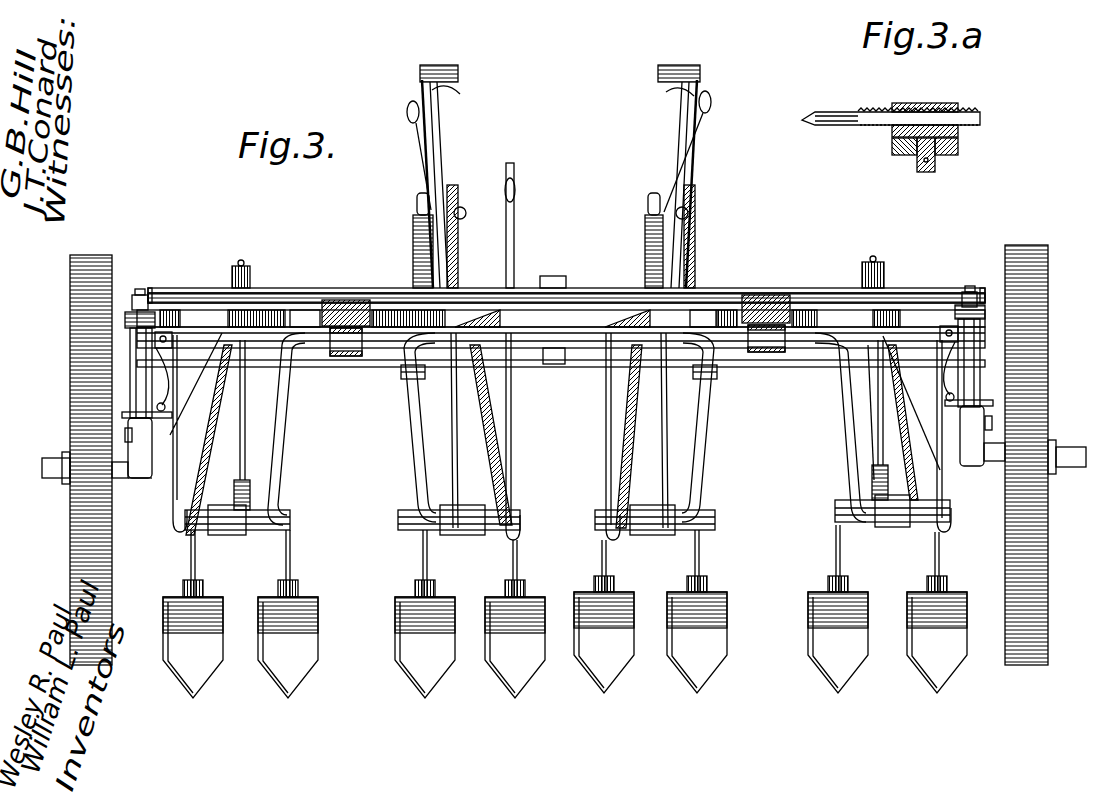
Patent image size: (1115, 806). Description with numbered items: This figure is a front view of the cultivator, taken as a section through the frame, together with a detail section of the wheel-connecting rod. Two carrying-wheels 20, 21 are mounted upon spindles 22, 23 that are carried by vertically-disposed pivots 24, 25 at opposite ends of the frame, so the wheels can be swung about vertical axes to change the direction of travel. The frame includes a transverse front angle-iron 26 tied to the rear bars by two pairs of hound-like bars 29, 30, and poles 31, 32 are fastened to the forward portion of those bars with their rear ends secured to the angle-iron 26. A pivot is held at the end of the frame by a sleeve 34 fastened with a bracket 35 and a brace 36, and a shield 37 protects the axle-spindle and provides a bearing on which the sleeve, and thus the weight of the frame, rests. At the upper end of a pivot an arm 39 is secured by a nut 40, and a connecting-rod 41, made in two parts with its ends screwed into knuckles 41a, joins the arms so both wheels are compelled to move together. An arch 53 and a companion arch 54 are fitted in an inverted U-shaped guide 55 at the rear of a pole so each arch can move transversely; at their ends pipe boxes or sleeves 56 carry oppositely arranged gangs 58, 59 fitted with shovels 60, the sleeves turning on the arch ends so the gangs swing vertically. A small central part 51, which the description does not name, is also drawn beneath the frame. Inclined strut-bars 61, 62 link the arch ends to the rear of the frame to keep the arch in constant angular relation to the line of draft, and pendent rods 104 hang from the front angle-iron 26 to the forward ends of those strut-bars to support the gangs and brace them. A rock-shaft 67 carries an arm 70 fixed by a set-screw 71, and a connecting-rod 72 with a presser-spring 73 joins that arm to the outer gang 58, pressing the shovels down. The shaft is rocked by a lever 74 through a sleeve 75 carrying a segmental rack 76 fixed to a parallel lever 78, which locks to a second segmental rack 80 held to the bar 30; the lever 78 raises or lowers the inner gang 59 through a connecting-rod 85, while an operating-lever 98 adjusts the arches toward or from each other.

In FIG. 3, the carrying-wheel 20 is at (1022, 262).
In FIG. 3, the carrying-wheel 21 is at (72, 415).
In FIG. 3, the spindle 22 is at (1065, 470).
In FIG. 3, the spindle 23 is at (56, 480).
In FIG. 3, the vertically-disposed pivot 24 is at (972, 290).
In FIG. 3, the vertically-disposed pivot 25 is at (150, 292).
In FIG. 3, the transverse angle-iron 26 is at (588, 290).
In FIG. 3, the bar 29 is at (302, 330).
In FIG. 3, the bar 30 is at (372, 330).
In FIG. 3, the pole 31 is at (770, 295).
In FIG. 3, the pole 32 is at (346, 300).
In FIG. 3, the sleeve 34 is at (150, 388).
In FIG. 3, the bracket 35 is at (168, 362).
In FIG. 3, the brace 36 is at (214, 366).
In FIG. 3, the shield 37 is at (140, 482).
In FIG. 3a, the arm 39 is at (958, 148).
In FIG. 3, the nut 40 is at (132, 306).
In FIG. 3a, the connecting-rod 41 is at (858, 126).
In FIG. 3a, the knuckle 41a is at (944, 90).
In FIG. 3, the center bracket 51 is at (548, 364).
In FIG. 3, the arch 53 is at (838, 430).
In FIG. 3, the arch 54 is at (358, 410).
In FIG. 3, the inverted U-shaped guide 55 is at (962, 365).
In FIG. 3, the pipe box or sleeve 56 is at (970, 400).
In FIG. 3, the gang 58 is at (291, 568).
In FIG. 3, the gang 59 is at (424, 552).
In FIG. 3, the shovel 60 is at (290, 662).
In FIG. 3, the strut-bar or link 61 is at (200, 430).
In FIG. 3, the strut-bar or link 62 is at (496, 452).
In FIG. 3, the rock-shaft 67 is at (314, 290).
In FIG. 3, the arm 70 is at (870, 350).
In FIG. 3, the set-screw 71 is at (573, 258).
In FIG. 3, the connecting-rod 72 is at (244, 412).
In FIG. 3, the presser-spring 73 is at (234, 495).
In FIG. 3, the lever 74 is at (409, 126).
In FIG. 3, the sleeve 75 is at (884, 482).
In FIG. 3, the segmental rack 76 is at (413, 250).
In FIG. 3, the lever 78 is at (460, 80).
In FIG. 3, the segmental rack 80 is at (458, 268).
In FIG. 3, the connecting-rod 85 is at (418, 440).
In FIG. 3, the operating-lever 98 is at (516, 264).
In FIG. 3, the pendent rod 104 is at (606, 398).